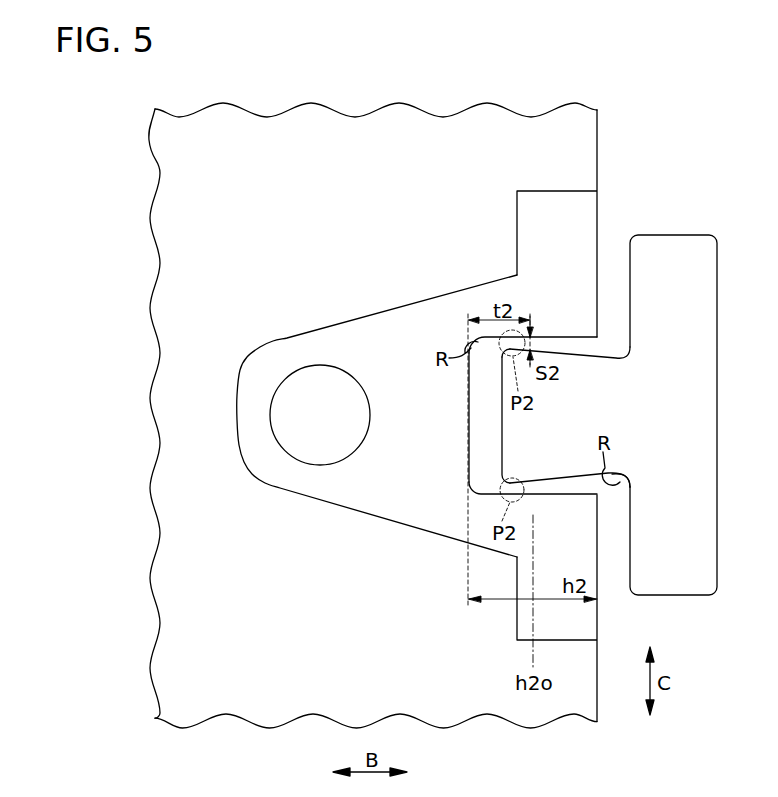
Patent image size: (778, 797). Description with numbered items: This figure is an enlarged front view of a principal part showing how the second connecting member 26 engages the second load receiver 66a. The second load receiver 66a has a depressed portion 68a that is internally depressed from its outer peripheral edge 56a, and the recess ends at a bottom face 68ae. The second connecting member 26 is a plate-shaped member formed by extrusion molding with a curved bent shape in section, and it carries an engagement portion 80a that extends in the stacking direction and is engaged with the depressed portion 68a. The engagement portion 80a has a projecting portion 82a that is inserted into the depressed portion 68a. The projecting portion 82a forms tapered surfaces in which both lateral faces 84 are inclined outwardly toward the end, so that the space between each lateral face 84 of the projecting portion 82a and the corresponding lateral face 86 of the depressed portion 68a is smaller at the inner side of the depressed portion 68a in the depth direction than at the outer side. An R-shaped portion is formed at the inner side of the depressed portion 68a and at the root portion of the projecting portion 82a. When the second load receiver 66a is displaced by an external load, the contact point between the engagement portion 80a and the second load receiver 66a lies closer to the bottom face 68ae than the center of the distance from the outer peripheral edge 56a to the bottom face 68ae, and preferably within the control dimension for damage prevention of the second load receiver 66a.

The second connecting member 26 is at (676, 226).
The outer peripheral edge 56a is at (598, 173).
The second load receiver 66a is at (397, 300).
The depressed portion 68a is at (487, 443).
The bottom face 68ae is at (469, 418).
The engagement portion 80a is at (616, 504).
The projecting portion 82a is at (507, 430).
The lateral face 84 is at (567, 353).
The lateral face 86 is at (493, 340).